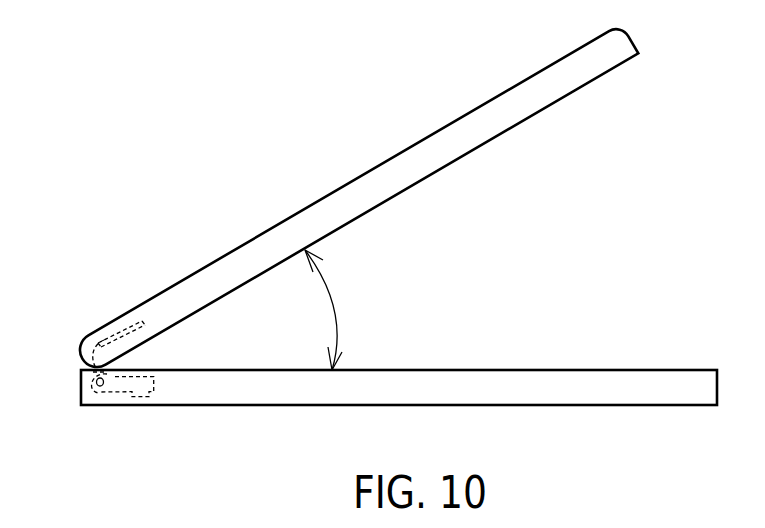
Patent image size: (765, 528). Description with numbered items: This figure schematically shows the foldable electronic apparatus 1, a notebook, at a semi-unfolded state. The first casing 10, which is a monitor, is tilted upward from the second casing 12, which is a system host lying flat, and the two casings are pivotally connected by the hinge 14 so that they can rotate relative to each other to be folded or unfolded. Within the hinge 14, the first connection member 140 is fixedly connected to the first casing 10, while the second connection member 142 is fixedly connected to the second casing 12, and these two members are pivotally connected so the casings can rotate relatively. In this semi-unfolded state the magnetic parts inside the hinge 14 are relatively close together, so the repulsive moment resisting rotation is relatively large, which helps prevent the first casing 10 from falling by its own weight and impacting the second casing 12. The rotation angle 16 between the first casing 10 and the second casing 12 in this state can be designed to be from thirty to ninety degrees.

The foldable electronic apparatus 1 is at (200, 78).
The first casing 10 is at (463, 130).
The second casing 12 is at (563, 382).
The hinge 14 is at (120, 352).
The first connection member 140 is at (102, 340).
The second connection member 142 is at (114, 385).
The rotation angle 16 is at (335, 310).